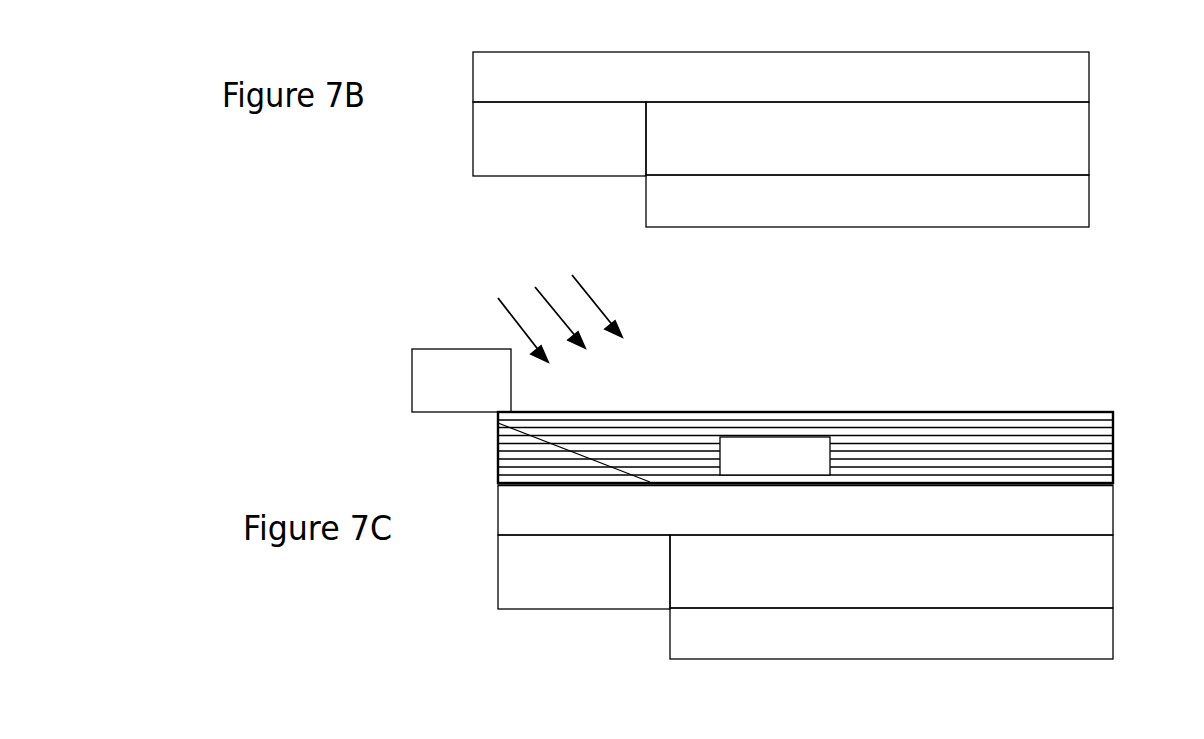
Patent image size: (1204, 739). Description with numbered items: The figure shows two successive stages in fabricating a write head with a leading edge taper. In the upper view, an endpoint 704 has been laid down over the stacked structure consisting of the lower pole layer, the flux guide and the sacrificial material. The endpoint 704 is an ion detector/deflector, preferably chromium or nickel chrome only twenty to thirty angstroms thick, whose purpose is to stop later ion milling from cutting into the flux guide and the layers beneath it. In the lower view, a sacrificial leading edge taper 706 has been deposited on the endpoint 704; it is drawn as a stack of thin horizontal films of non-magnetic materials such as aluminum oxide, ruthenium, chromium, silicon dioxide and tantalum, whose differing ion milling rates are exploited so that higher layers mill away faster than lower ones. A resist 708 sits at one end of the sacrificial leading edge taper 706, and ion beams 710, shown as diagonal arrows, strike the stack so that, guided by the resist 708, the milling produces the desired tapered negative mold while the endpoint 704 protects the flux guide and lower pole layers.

In FIG. 7B, the endpoint 704 is at (1089, 82).
In FIG. 7C, the sacrificial leading edge taper (SLET) 706 is at (1065, 408).
In FIG. 7C, the resist 708 is at (398, 352).
In FIG. 7C, the ion beams 710 is at (532, 290).